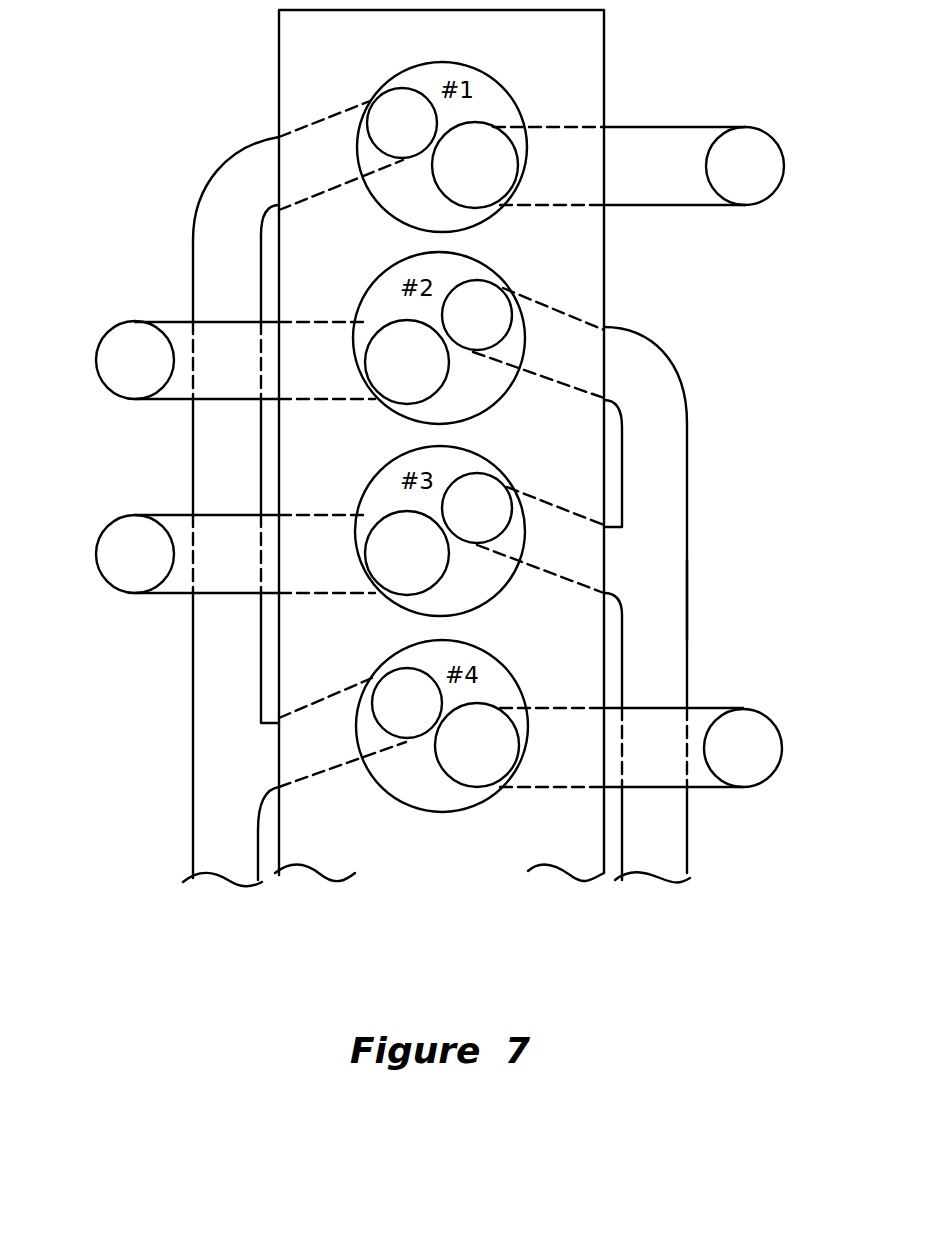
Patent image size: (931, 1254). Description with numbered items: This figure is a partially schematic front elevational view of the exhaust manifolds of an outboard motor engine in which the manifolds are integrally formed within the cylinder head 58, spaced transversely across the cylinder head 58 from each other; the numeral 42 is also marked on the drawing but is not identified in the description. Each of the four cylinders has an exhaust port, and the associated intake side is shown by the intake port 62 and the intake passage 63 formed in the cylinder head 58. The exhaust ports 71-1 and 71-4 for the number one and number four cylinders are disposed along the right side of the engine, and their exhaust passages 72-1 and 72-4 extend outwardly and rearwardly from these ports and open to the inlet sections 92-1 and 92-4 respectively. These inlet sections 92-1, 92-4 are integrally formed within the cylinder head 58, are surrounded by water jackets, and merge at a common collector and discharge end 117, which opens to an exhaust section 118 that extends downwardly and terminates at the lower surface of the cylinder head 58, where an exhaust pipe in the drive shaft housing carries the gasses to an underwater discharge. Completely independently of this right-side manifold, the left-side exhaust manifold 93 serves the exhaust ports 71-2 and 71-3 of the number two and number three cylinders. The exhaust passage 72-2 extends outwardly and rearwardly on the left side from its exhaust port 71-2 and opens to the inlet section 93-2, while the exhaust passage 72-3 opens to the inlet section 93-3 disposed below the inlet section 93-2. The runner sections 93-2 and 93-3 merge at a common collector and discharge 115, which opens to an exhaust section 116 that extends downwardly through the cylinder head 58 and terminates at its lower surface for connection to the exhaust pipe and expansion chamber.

The manifold assembly 42 is at (157, 632).
The cylinder head 58 is at (604, 251).
The intake port 62 is at (483, 190).
The intake passage 63 is at (680, 127).
The exhaust port 71-1 is at (408, 103).
The exhaust port 71-2 is at (483, 295).
The exhaust port 71-3 is at (475, 498).
The exhaust port 71-4 is at (390, 690).
The exhaust passage 72-1 is at (318, 118).
The exhaust passage 72-2 is at (555, 300).
The exhaust passage 72-3 is at (563, 580).
The exhaust passage 72-4 is at (328, 770).
The inlet section 92-1 is at (228, 162).
The inlet section 92-4 is at (263, 790).
The exhaust manifold 93 is at (738, 545).
The inlet section 93-2 is at (648, 348).
The inlet section 93-3 is at (612, 527).
The common collector and discharge 115 is at (672, 600).
The exhaust section 116 is at (690, 687).
The common collector and discharge end 117 is at (203, 812).
The exhaust section 118 is at (192, 842).